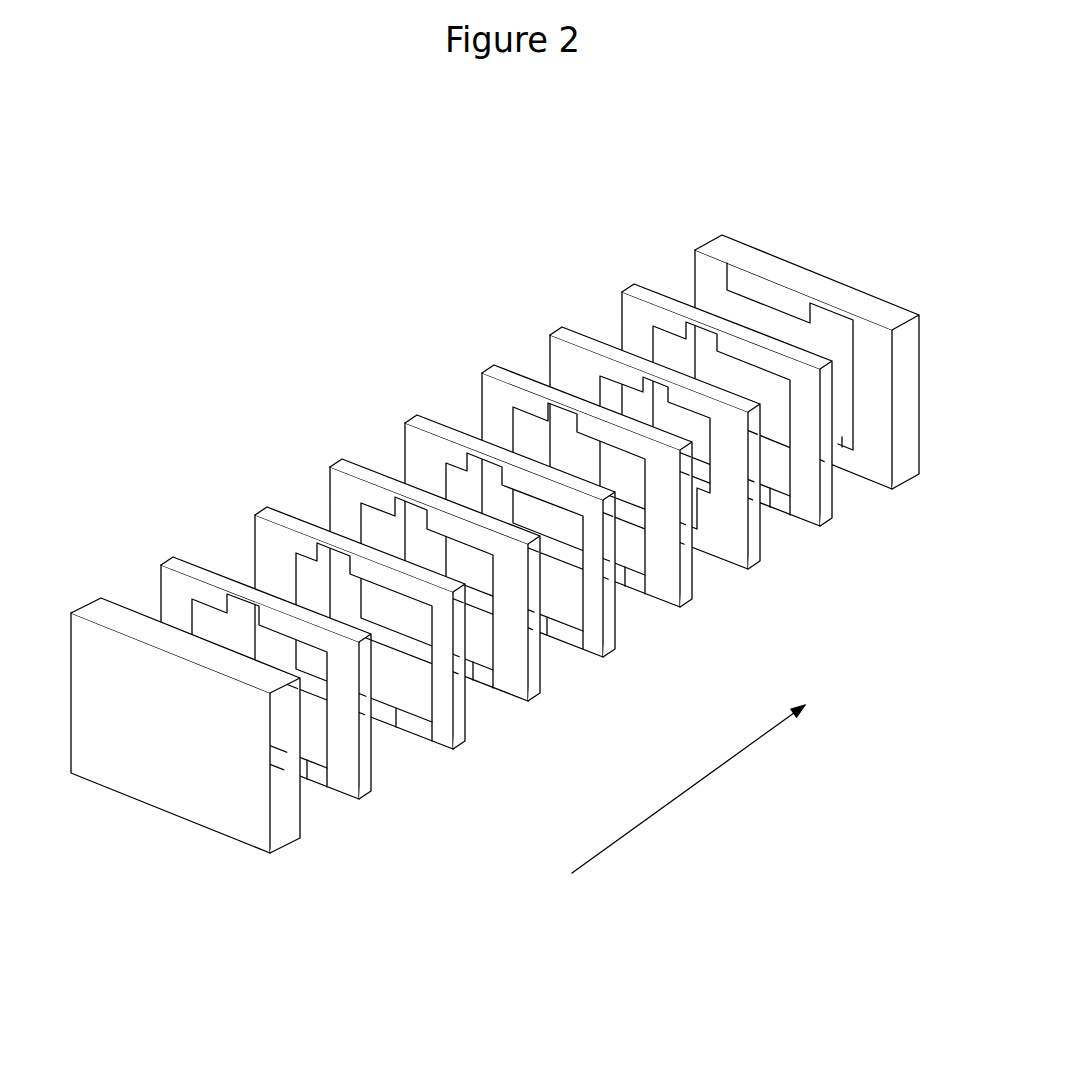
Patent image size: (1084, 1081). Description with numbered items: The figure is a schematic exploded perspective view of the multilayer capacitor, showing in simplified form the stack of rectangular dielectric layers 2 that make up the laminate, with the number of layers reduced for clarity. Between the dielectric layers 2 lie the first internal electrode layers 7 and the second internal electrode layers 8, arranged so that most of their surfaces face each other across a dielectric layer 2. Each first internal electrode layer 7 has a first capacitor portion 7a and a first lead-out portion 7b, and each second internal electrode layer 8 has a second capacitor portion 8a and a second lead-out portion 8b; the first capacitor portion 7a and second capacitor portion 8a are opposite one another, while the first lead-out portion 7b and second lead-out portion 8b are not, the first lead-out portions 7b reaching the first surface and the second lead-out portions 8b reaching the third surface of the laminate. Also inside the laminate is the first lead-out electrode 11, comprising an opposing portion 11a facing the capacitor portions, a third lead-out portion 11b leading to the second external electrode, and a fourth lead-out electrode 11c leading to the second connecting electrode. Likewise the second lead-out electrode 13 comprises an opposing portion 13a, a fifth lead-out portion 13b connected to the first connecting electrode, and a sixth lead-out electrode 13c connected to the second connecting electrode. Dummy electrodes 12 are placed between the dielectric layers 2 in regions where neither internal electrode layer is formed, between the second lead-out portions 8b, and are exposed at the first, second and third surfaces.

The dielectric layer 2 is at (503, 543).
The first internal electrode layer 7 is at (497, 707).
The first capacitor portion 7a is at (338, 790).
The first lead-out portion 7b is at (320, 723).
The second internal electrode layer 8 is at (423, 673).
The second capacitor portion 8a is at (558, 600).
The second lead-out portion 8b is at (327, 558).
The first lead-out electrode 11 is at (791, 330).
The opposing portion 11a is at (773, 320).
The third lead-out portion 11b is at (708, 267).
The fourth lead-out electrode 11c is at (833, 317).
The dummy electrode 12 is at (440, 542).
The second lead-out electrode 13 is at (605, 385).
The opposing portion 13a is at (667, 423).
The fifth lead-out portion 13b is at (605, 375).
The sixth lead-out electrode 13c is at (690, 408).